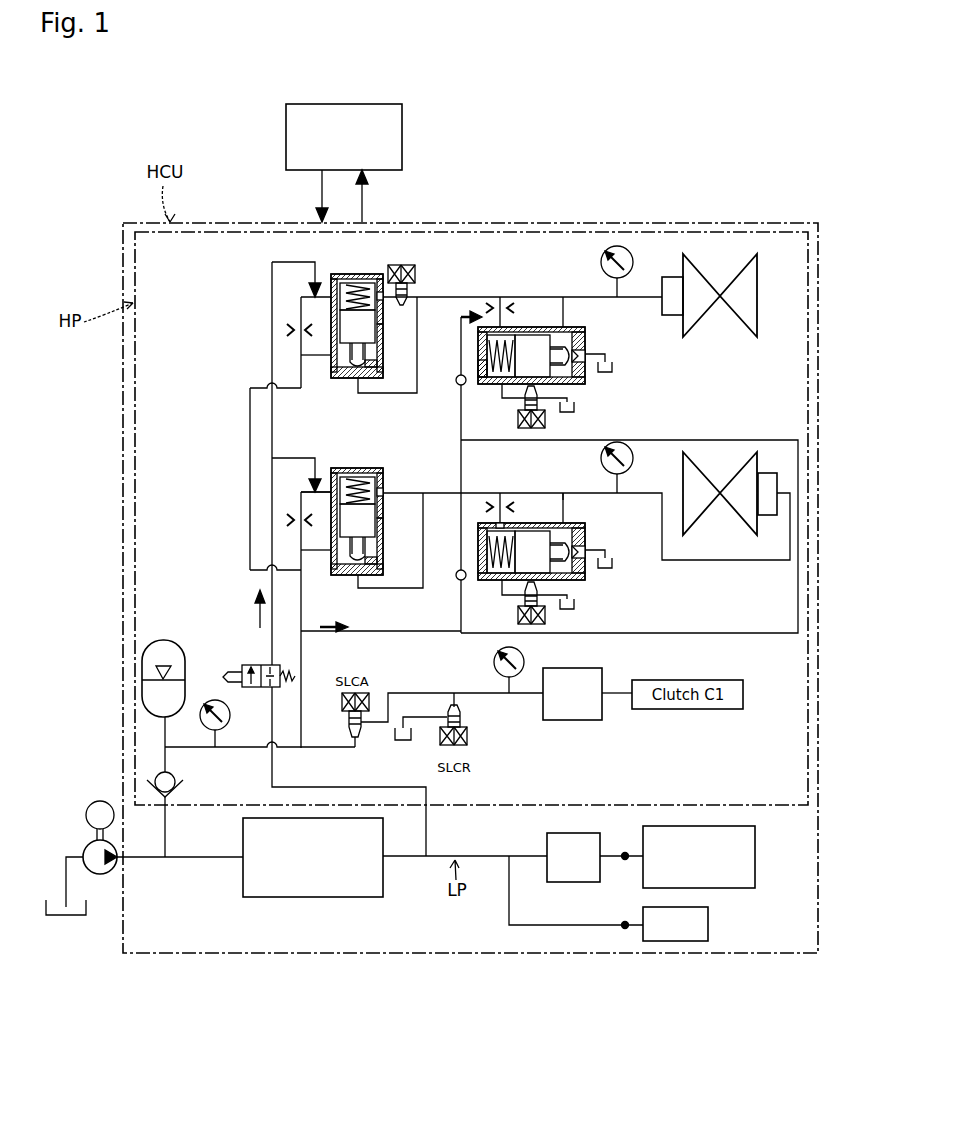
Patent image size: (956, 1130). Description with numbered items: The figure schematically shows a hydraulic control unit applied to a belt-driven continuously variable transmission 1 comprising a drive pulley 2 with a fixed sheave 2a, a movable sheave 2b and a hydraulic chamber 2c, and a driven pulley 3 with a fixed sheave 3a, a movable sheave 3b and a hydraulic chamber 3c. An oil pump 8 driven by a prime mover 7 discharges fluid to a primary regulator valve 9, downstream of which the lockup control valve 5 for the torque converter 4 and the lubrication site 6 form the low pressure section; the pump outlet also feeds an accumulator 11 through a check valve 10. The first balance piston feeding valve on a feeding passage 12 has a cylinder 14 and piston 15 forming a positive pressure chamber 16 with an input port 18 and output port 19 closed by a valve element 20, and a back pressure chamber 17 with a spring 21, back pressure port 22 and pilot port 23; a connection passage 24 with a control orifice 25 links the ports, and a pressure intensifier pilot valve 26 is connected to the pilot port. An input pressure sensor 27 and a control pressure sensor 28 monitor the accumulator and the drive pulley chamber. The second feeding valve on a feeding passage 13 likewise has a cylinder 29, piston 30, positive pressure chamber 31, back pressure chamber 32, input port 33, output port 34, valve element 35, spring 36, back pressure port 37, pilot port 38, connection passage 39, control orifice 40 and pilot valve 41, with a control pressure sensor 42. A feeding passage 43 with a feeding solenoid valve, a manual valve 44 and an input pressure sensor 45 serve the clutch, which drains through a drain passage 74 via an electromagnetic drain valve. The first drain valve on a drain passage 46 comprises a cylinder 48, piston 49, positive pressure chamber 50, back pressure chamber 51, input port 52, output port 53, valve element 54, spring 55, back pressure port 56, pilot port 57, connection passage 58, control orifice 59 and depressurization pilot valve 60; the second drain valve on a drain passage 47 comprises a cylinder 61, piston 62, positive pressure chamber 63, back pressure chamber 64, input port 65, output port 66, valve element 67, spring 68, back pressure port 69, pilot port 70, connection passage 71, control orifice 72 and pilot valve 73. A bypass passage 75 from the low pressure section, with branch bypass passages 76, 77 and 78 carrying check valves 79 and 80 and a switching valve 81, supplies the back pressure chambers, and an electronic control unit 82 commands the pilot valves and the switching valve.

The continuously variable transmission 1 is at (775, 262).
The drive pulley 2 is at (706, 275).
The fixed sheave 2a is at (738, 282).
The movable sheave 2b is at (703, 282).
The hydraulic chamber 2c is at (672, 315).
The driven pulley 3 is at (739, 483).
The fixed sheave 3a is at (697, 515).
The movable sheave 3b is at (742, 515).
The hydraulic chamber 3c is at (768, 473).
The torque converter 4 is at (755, 851).
The lockup control valve 5 is at (543, 845).
The lubrication site 6 is at (708, 928).
The prime mover 7 is at (90, 802).
The oil pump 8 is at (83, 846).
The primary regulator valve 9 is at (383, 886).
The check valve 10 is at (195, 784).
The accumulator 11 is at (164, 640).
The feeding passage 12 is at (250, 408).
The feeding passage 13 is at (448, 492).
The cylinder 14 is at (372, 330).
The piston 15 is at (382, 344).
The positive pressure chamber 16 is at (378, 366).
The back pressure chamber 17 is at (384, 300).
The input port 18 is at (333, 372).
The output port 19 is at (357, 372).
The valve element 20 is at (367, 378).
The spring 21 is at (377, 334).
The back pressure port 22 is at (312, 284).
The pilot port 23 is at (384, 297).
The connection passage 24 is at (297, 352).
The control orifice 25 is at (280, 330).
The pressure intensifier pilot valve 26 is at (420, 270).
The input pressure sensor 27 is at (210, 700).
The control pressure sensor 28 is at (631, 250).
The cylinder 29 is at (382, 537).
The piston 30 is at (372, 522).
The positive pressure chamber 31 is at (378, 562).
The back pressure chamber 32 is at (384, 496).
The input port 33 is at (333, 570).
The output port 34 is at (357, 566).
The valve element 35 is at (365, 575).
The spring 36 is at (377, 522).
The back pressure port 37 is at (320, 480).
The pilot port 38 is at (384, 492).
The connection passage 39 is at (301, 542).
The control orifice 40 is at (280, 520).
The pressure intensifier pilot valve 41 is at (420, 460).
The control pressure sensor 42 is at (633, 460).
The feeding passage 43 is at (398, 693).
The manual valve 44 is at (576, 668).
The input pressure sensor 45 is at (494, 660).
The drain passage 46 is at (570, 308).
The drain passage 47 is at (564, 505).
The cylinder 48 is at (580, 378).
The piston 49 is at (529, 339).
The positive pressure chamber 50 is at (562, 368).
The back pressure chamber 51 is at (484, 384).
The input port 52 is at (562, 320).
The output port 53 is at (590, 352).
The valve element 54 is at (572, 346).
The spring 55 is at (478, 362).
The back pressure port 56 is at (487, 346).
The pilot port 57 is at (504, 398).
The connection passage 58 is at (510, 304).
The control orifice 59 is at (497, 306).
The depressurization pilot valve 60 is at (552, 425).
The cylinder 61 is at (580, 576).
The piston 62 is at (533, 537).
The positive pressure chamber 63 is at (562, 564).
The back pressure chamber 64 is at (484, 580).
The input port 65 is at (565, 520).
The output port 66 is at (580, 545).
The valve element 67 is at (590, 568).
The spring 68 is at (487, 548).
The back pressure port 69 is at (505, 522).
The pilot port 70 is at (502, 595).
The connection passage 71 is at (506, 503).
The control orifice 72 is at (496, 500).
The depressurization pilot valve 73 is at (552, 618).
The drain passage 74 is at (425, 730).
The bypass passage 75 is at (272, 428).
The bypass passage 76 is at (297, 458).
The bypass passage 77 is at (664, 633).
The bypass passage 78 is at (456, 632).
The check valve 79 is at (452, 388).
The check valve 80 is at (452, 584).
The switching valve 81 is at (248, 664).
The electronic control unit 82 is at (402, 142).